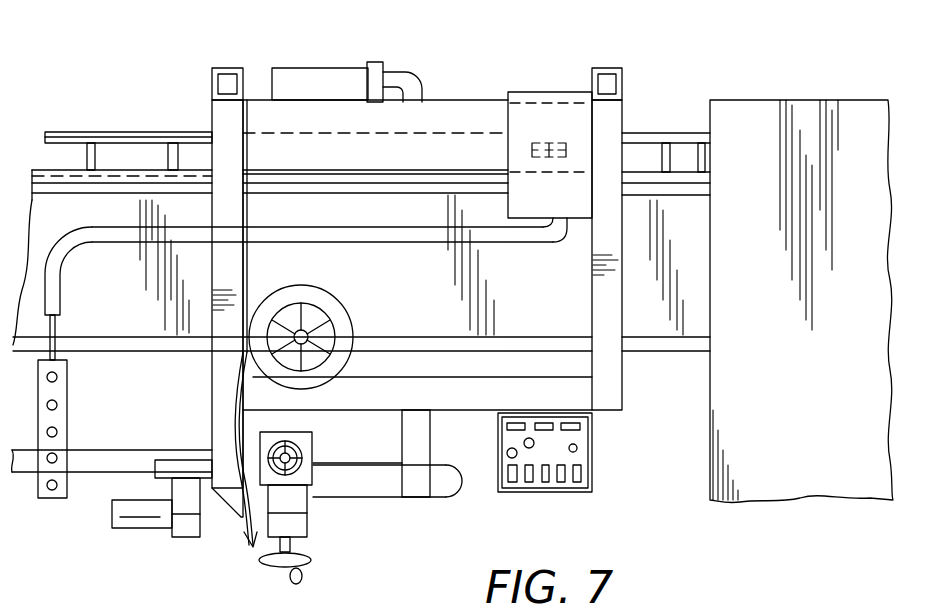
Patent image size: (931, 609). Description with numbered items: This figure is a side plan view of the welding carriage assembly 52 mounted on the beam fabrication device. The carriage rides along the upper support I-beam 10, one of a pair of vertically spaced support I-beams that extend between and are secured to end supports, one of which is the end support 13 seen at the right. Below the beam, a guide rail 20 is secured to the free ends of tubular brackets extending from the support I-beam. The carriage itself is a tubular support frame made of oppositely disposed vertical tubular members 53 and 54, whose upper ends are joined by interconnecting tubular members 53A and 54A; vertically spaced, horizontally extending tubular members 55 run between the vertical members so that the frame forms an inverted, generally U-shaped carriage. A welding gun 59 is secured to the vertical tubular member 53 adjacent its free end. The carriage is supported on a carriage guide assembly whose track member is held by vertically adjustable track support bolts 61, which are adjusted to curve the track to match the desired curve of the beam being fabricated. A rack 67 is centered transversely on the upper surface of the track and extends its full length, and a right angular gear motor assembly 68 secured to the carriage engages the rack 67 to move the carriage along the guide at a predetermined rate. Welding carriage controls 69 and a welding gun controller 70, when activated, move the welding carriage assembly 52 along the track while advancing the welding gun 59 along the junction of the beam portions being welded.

The support I-beam 10 is at (122, 302).
The end support 13 is at (764, 116).
The guide rail 20 is at (127, 455).
The welding carriage assembly 52 is at (466, 74).
The vertical tubular member 53 is at (235, 258).
The interconnecting tubular member 53A is at (212, 64).
The vertical tubular member 54 is at (592, 302).
The interconnecting tubular member 54A is at (625, 88).
The horizontally extending tubular member 55 is at (432, 132).
The welding gun 59 is at (130, 530).
The track support bolt 61 is at (86, 155).
The rack 67 is at (116, 132).
The right angular gear motor assembly 68 is at (303, 68).
The welding carriage controls 69 is at (67, 386).
The welding gun controller 70 is at (592, 462).